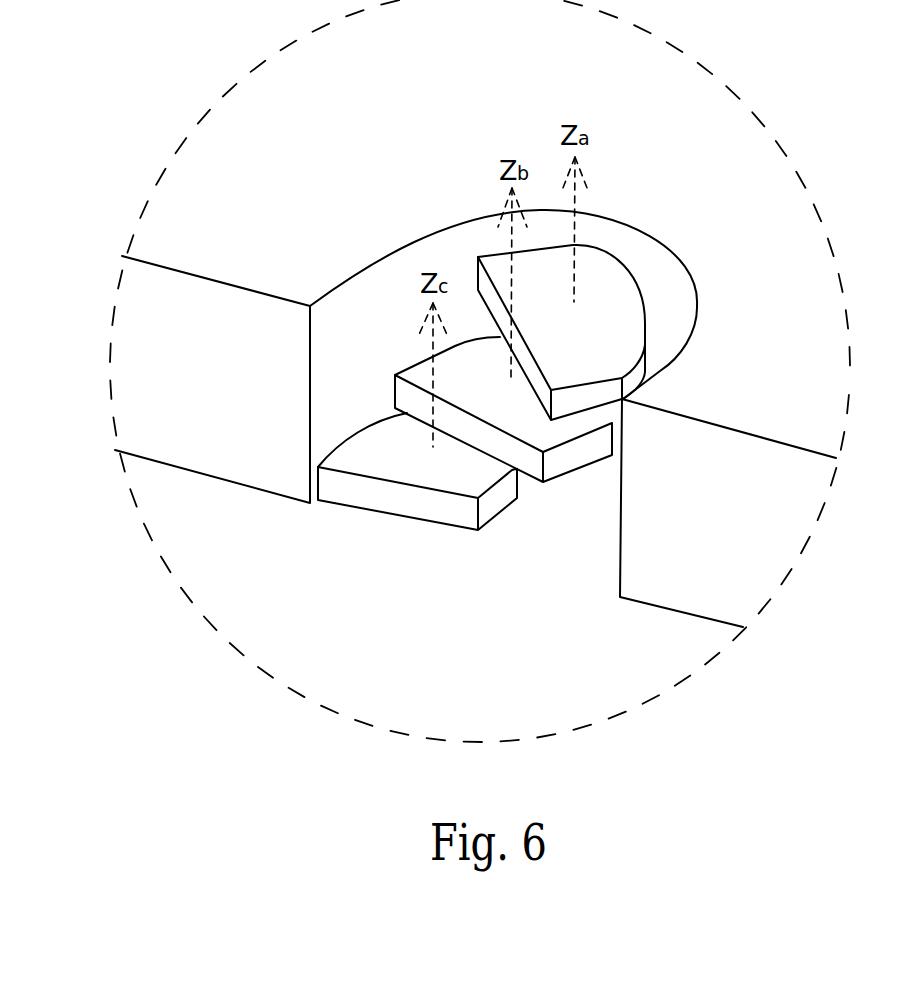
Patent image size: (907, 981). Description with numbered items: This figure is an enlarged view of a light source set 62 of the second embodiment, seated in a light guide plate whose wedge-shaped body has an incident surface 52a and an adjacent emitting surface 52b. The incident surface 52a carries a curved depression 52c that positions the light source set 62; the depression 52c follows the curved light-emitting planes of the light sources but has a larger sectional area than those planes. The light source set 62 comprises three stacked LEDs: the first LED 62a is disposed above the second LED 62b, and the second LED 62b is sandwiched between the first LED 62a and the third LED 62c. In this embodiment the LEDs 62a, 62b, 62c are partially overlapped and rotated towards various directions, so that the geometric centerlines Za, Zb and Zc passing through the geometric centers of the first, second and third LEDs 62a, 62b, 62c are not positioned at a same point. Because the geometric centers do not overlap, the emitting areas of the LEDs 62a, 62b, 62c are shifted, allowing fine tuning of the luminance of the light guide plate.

The incident surface 52a is at (767, 548).
The emitting surface 52b is at (433, 85).
The depression 52c is at (697, 298).
The light source set 62 is at (403, 167).
The first LED 62a is at (615, 280).
The second LED 62b is at (563, 457).
The third LED 62c is at (393, 502).